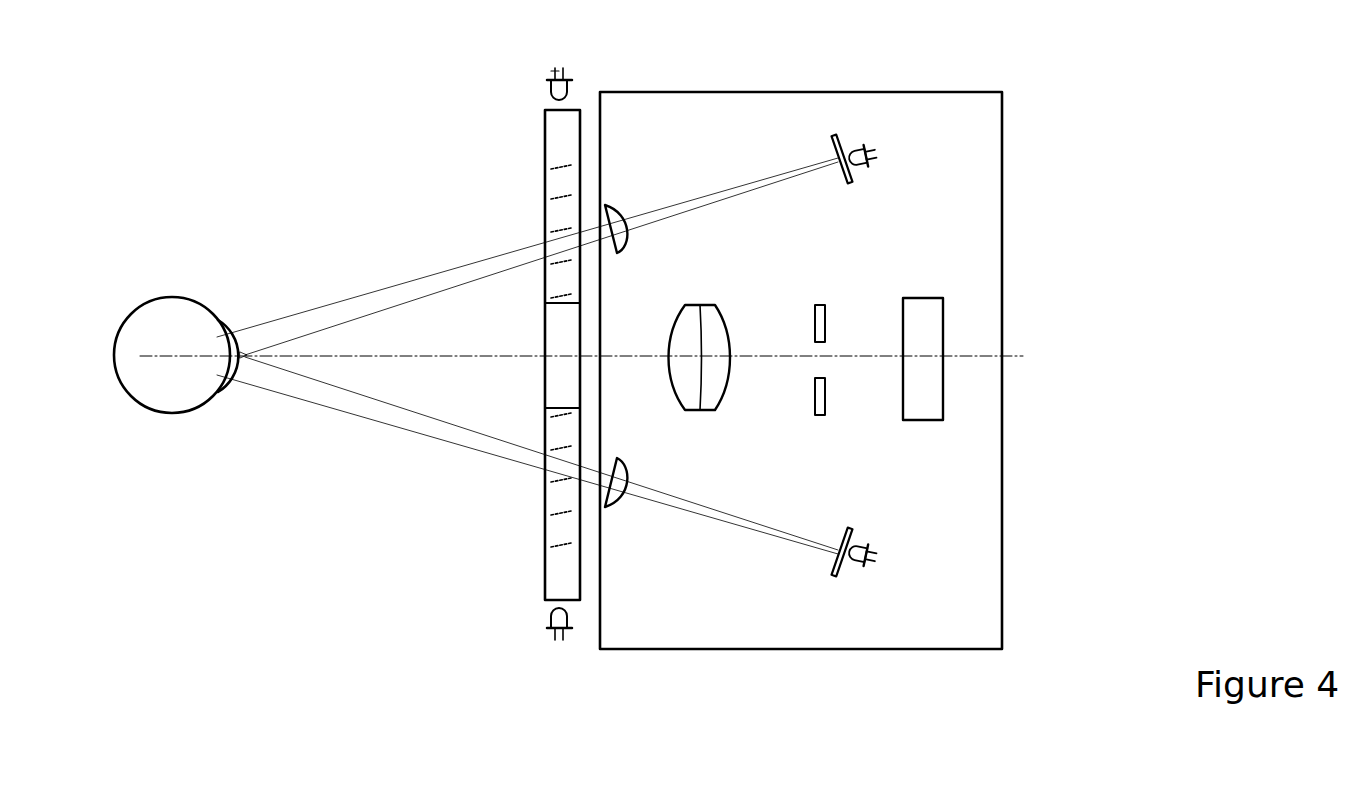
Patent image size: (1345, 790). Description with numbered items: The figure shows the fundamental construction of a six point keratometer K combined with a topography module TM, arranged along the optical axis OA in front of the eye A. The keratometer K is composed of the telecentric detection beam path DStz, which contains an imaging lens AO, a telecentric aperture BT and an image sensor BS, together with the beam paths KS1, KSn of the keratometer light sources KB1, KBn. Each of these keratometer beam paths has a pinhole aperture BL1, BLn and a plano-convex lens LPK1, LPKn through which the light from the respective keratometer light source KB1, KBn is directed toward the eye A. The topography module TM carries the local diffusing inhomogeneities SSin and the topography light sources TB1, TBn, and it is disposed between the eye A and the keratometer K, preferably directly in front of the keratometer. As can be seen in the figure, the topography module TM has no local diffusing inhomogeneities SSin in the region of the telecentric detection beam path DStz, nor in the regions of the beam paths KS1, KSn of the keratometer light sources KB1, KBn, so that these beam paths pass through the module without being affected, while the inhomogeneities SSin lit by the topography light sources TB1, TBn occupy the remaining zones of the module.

The eye A is at (172, 318).
The optical axis OA is at (973, 355).
The first collimated beam KS1 is at (333, 312).
The beam path for keratometer light source KSn is at (400, 418).
The topography module TM is at (540, 570).
The local diffusing inhomogeneities SSin is at (560, 165).
The telecentric detection beam path DStz is at (555, 330).
The first partial illumination light source TB1 is at (548, 88).
The topography light source TBn is at (548, 625).
The 6 point keratometer K is at (988, 198).
The first plano-convex lens LPK1 is at (610, 205).
The plano-convex lens LPKn is at (613, 510).
The imaging lens AO is at (715, 402).
The telecentric aperture BT is at (822, 393).
The image sensor BS is at (928, 372).
The first illumination lens BL1 is at (840, 137).
The first collimated light source KB1 is at (870, 138).
The pinhole aperture BLn is at (836, 580).
The keratometer light source KBn is at (865, 565).